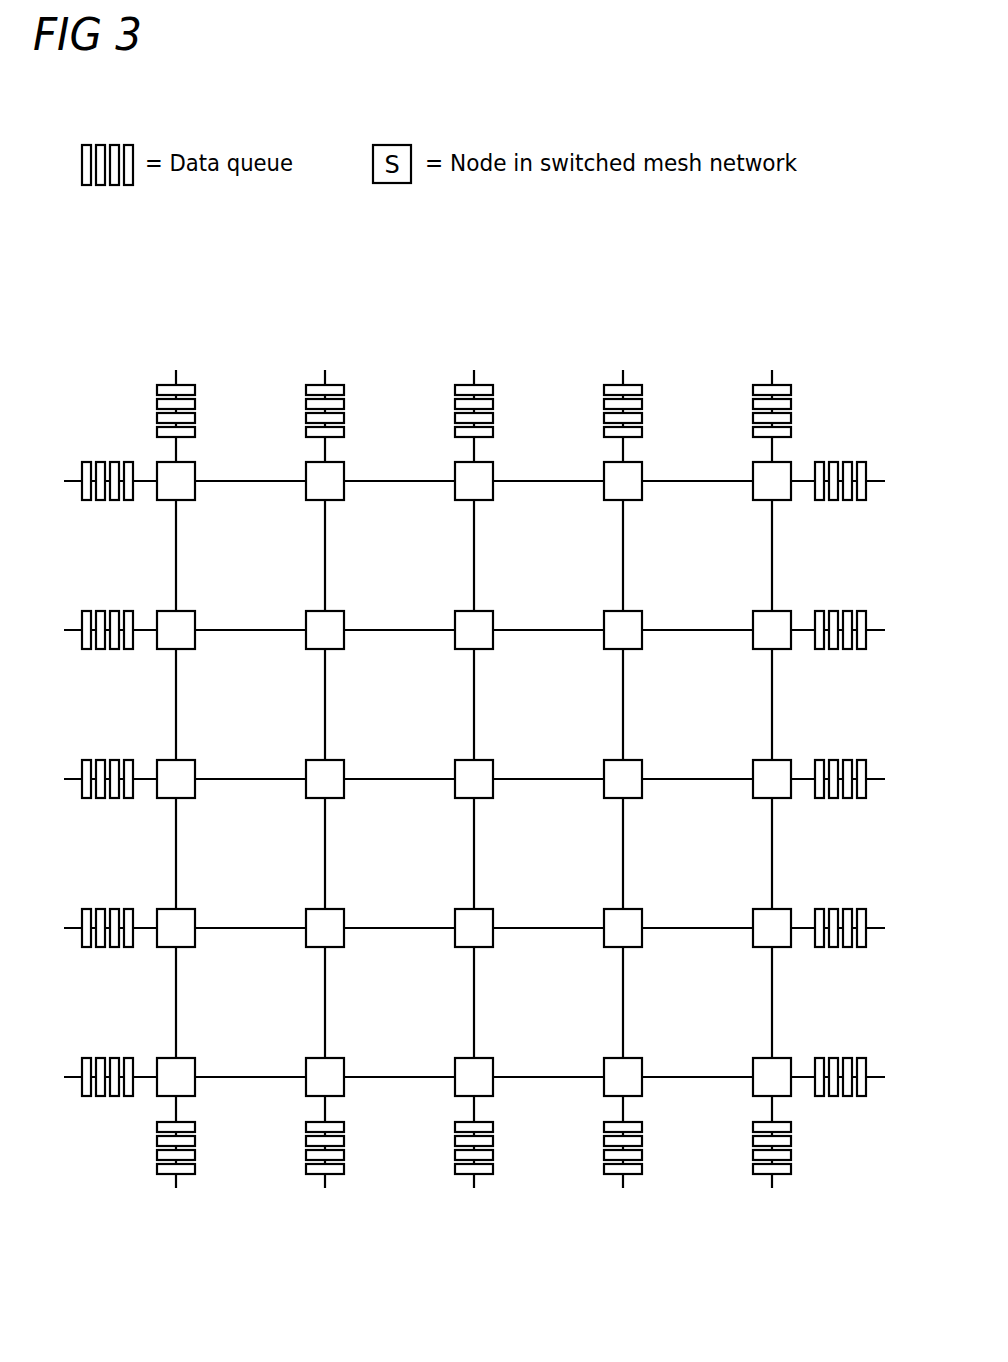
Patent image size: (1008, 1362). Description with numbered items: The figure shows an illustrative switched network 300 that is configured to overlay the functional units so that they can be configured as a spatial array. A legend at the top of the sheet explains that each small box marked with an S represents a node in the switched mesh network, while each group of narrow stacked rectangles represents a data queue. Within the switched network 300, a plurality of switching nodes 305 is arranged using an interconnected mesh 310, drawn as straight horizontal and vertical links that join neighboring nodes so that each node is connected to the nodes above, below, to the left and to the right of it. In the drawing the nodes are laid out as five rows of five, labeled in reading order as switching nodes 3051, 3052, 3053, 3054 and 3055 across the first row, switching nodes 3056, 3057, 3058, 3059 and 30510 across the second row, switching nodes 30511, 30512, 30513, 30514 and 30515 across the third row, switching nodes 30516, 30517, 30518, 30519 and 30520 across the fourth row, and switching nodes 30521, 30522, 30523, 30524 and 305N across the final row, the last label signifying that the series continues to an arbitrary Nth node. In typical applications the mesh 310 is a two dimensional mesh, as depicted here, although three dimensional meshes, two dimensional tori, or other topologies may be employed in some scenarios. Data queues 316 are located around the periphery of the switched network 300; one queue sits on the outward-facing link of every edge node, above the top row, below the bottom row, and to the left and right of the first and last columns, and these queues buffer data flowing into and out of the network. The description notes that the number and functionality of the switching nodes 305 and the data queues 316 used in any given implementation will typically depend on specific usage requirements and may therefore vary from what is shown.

The switched network 300 is at (488, 266).
The switching nodes 305 is at (505, 797).
The switching node 3051 is at (195, 500).
The switching node 3052 is at (344, 500).
The switching node 3053 is at (493, 500).
The switching node 3054 is at (642, 500).
The switching node 3055 is at (791, 500).
The switching node 3056 is at (195, 649).
The switching node 3057 is at (344, 649).
The switching node 3058 is at (493, 649).
The switching node 3059 is at (642, 649).
The switching node 30510 is at (791, 649).
The switching node 30511 is at (195, 798).
The switching node 30512 is at (344, 798).
The switching node 30513 is at (493, 798).
The switching node 30514 is at (642, 798).
The switching node 30515 is at (791, 798).
The switching node 30516 is at (195, 947).
The switching node 30517 is at (344, 947).
The switching node 30518 is at (493, 947).
The switching node 30519 is at (642, 947).
The switching node 30520 is at (791, 947).
The switching node 30521 is at (195, 1096).
The switching node 30522 is at (344, 1096).
The switching node 30523 is at (493, 1096).
The switching node 30524 is at (642, 1096).
The switching node 305N is at (791, 1096).
The interconnected mesh 310 is at (402, 477).
The data queues 316 is at (493, 382).